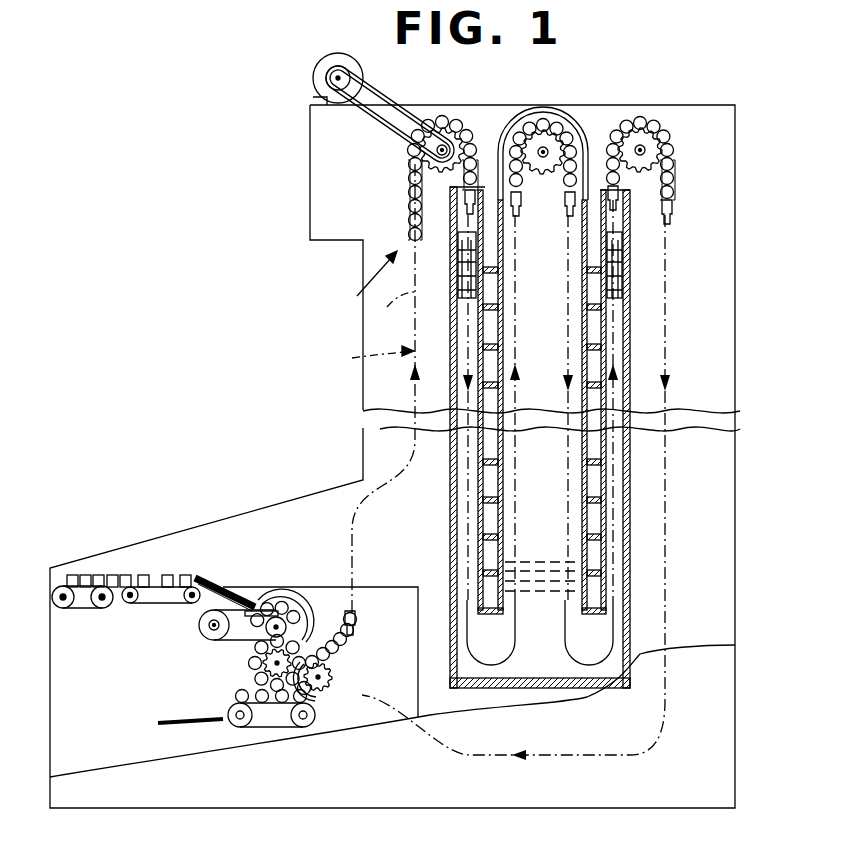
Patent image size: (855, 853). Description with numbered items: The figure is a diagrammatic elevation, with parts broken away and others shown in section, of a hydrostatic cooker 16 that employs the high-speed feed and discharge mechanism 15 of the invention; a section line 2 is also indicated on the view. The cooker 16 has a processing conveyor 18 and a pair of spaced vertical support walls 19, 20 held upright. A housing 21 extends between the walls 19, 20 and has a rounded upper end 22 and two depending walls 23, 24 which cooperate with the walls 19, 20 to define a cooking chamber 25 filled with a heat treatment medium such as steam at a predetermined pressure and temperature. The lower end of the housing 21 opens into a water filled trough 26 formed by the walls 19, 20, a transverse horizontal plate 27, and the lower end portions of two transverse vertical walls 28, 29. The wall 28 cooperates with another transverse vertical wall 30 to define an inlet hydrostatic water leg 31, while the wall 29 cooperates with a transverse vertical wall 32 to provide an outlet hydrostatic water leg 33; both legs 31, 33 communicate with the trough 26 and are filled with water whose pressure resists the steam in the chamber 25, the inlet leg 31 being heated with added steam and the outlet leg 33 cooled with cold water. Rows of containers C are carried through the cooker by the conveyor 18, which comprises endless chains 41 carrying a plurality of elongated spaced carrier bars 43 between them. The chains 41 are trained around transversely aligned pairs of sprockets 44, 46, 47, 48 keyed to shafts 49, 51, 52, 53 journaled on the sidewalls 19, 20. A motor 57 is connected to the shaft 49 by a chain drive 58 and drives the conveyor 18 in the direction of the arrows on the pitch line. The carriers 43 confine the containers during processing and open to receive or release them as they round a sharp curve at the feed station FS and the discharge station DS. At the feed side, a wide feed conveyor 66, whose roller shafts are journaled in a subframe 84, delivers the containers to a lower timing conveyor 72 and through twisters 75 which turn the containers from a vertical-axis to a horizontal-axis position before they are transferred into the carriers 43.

The section view direction 2 is at (363, 278).
The high-speed feed and discharge mechanism 15 is at (178, 558).
The hydrostatic cooker 16 is at (740, 280).
The processing conveyor 18 is at (368, 358).
The vertical support wall 19 is at (736, 428).
The vertical support wall 20 is at (740, 655).
The housing 21 is at (588, 118).
The rounded upper end 22 is at (555, 108).
The depending wall 23 is at (503, 262).
The depending wall 24 is at (578, 285).
The cooking chamber 25 is at (542, 442).
The water filled trough 26 is at (576, 684).
The transverse horizontal plate 27 is at (527, 684).
The transverse vertical wall 28 is at (450, 519).
The transverse vertical wall 29 is at (632, 526).
The transverse vertical wall 30 is at (503, 467).
The inlet hydrostatic water leg 31 is at (463, 546).
The transverse vertical wall 32 is at (583, 473).
The outlet hydrostatic water leg 33 is at (626, 500).
The endless chain 41 is at (393, 314).
The carrier bar 43 is at (410, 192).
The sprocket 44 is at (412, 173).
The sprocket 46 is at (508, 410).
The sprocket 47 is at (674, 172).
The sprocket 48 is at (340, 668).
The shaft 49 is at (442, 135).
The shaft 51 is at (543, 128).
The shaft 52 is at (641, 146).
The shaft 53 is at (345, 684).
The motor 57 is at (313, 80).
The chain drive 58 is at (372, 103).
The feed conveyor 66 is at (95, 607).
The lower timing conveyor 72 is at (168, 605).
The twister 75 is at (215, 575).
The subframe 84 is at (145, 717).
The containers C is at (100, 575).
The feed station FS is at (238, 653).
The discharge station DS is at (238, 684).